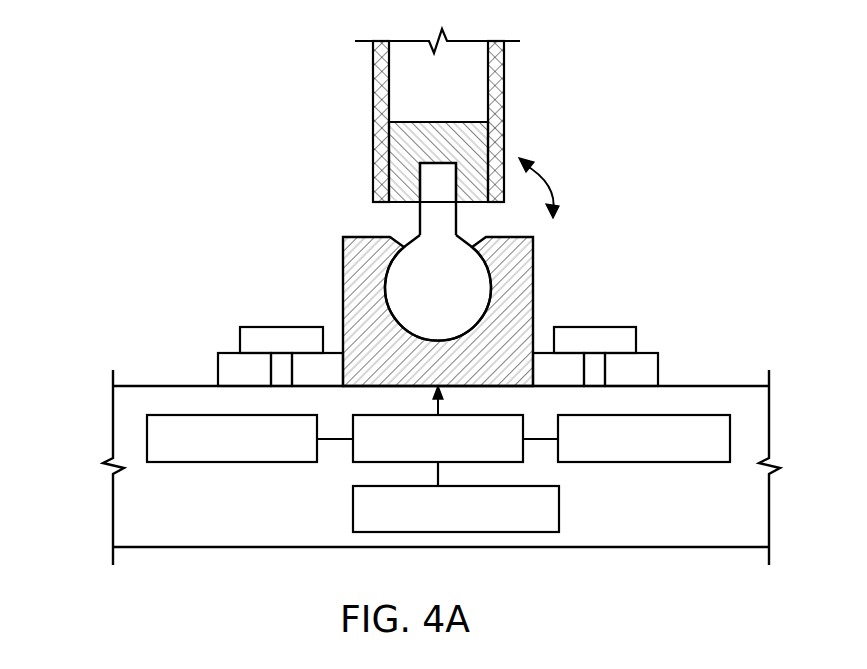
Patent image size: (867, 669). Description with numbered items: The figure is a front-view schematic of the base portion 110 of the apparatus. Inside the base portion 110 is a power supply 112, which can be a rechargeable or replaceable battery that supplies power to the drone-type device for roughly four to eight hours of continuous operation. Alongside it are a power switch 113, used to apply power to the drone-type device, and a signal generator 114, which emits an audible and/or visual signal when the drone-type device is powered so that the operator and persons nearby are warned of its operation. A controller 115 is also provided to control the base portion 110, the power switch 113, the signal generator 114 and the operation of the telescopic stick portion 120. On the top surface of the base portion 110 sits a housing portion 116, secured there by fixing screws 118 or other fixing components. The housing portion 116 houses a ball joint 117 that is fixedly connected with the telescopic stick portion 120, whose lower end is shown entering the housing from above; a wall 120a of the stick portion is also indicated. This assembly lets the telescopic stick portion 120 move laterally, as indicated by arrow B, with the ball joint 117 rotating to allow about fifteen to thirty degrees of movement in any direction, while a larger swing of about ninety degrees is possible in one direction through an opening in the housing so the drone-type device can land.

The base portion 110 is at (128, 404).
The power supply 112 is at (372, 463).
The power switch 113 is at (685, 463).
The signal generator 114 is at (560, 507).
The controller 115 is at (232, 463).
The housing portion 116 is at (530, 296).
The ball joint 117 is at (528, 262).
The fixing screws 118 is at (280, 326).
The telescopic stick portion 120 is at (338, 76).
The container wall 120a is at (505, 88).
The arrow B is at (548, 184).